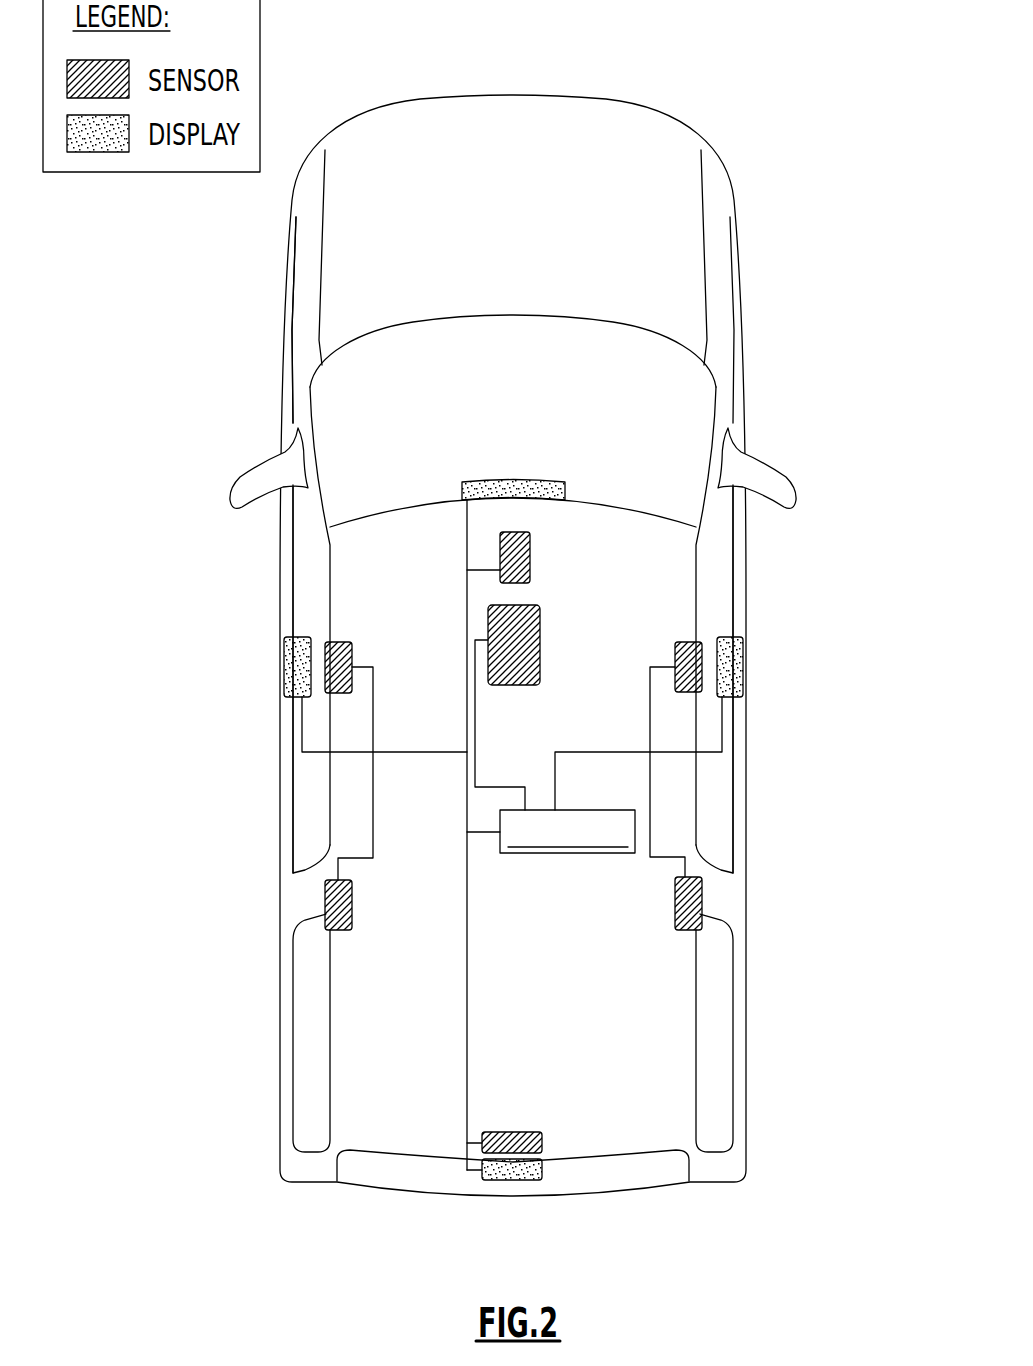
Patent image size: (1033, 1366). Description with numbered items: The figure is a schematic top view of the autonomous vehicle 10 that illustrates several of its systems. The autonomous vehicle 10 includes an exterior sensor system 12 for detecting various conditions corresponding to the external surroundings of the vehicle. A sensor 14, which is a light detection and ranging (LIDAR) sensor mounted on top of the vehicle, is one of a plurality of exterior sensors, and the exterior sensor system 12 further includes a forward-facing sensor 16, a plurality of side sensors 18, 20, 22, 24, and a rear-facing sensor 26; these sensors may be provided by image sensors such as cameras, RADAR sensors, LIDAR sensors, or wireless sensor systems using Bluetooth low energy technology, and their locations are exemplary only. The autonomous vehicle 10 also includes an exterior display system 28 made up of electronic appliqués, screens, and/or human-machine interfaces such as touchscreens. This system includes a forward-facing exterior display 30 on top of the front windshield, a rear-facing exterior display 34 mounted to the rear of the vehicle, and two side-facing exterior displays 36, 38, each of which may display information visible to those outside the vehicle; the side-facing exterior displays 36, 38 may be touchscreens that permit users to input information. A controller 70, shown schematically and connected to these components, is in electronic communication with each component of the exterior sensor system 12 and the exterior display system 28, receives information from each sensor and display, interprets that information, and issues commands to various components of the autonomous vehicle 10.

The autonomous vehicle 10 is at (822, 155).
The exterior sensor system 12 is at (808, 404).
The exterior display system 28 is at (828, 508).
The sensor 14 is at (537, 636).
The forward-facing sensor 16 is at (528, 549).
The side sensor 18 is at (350, 652).
The side sensor 20 is at (677, 645).
The side sensor 22 is at (350, 905).
The side sensor 24 is at (675, 900).
The rear-facing sensor 26 is at (520, 1133).
The forward-facing exterior display 30 is at (528, 490).
The rear-facing exterior display 34 is at (522, 1176).
The side-facing exterior display 36 is at (745, 663).
The side-facing exterior display 38 is at (284, 667).
The controller 70 is at (560, 855).